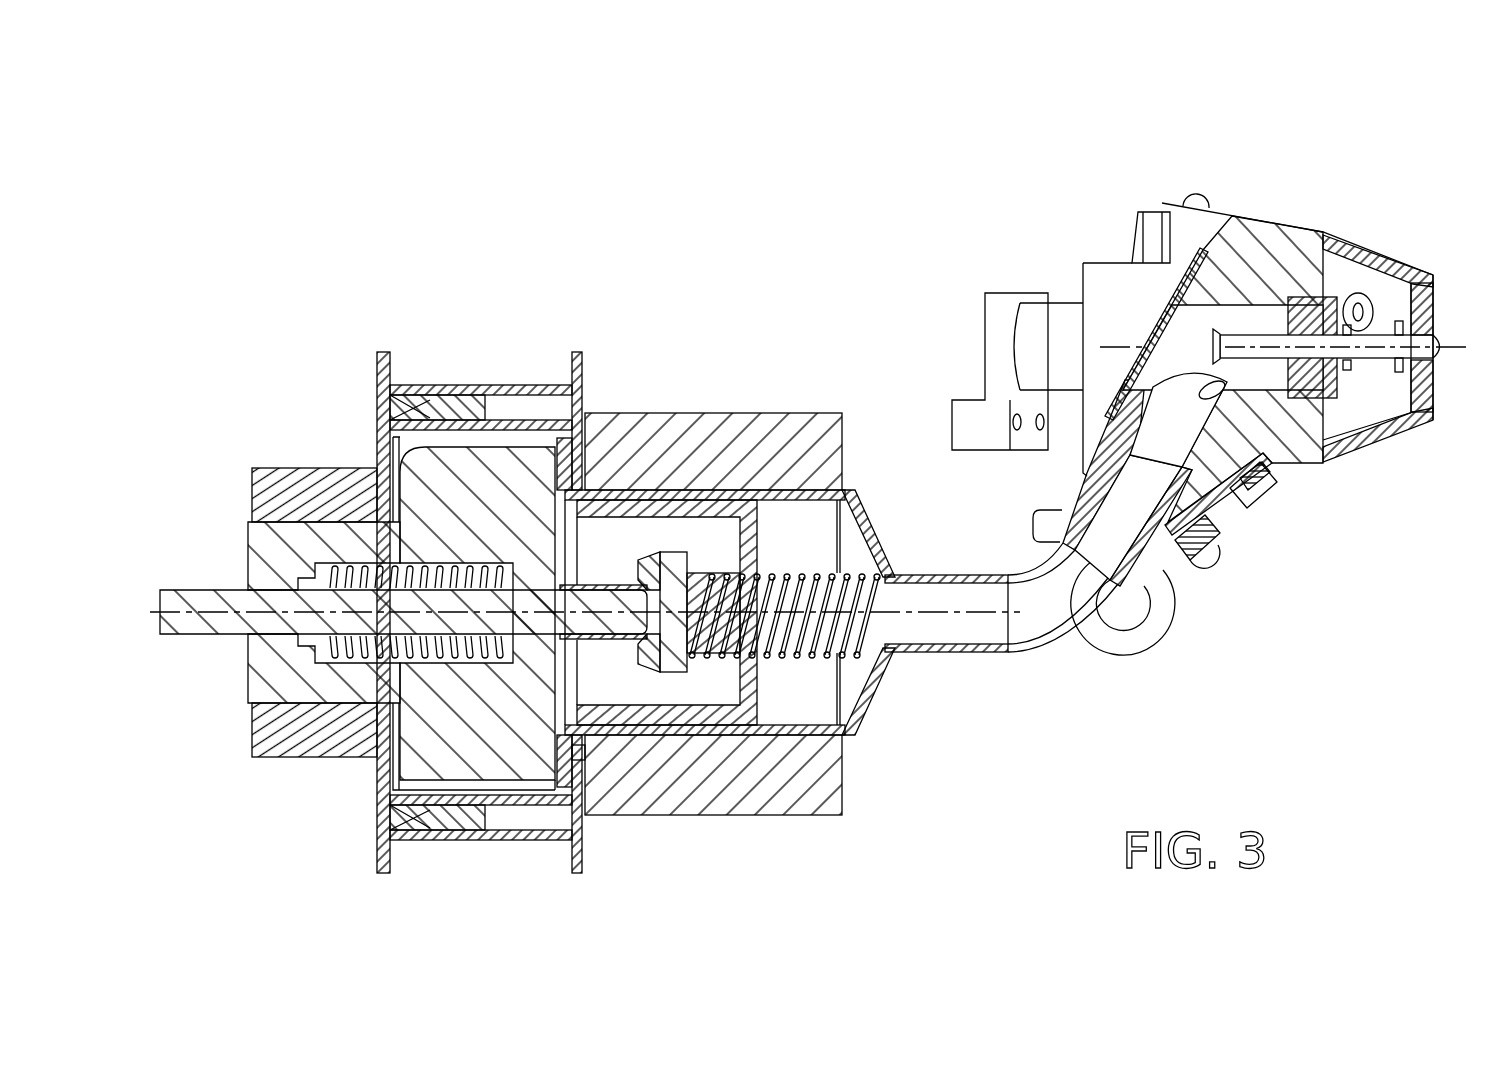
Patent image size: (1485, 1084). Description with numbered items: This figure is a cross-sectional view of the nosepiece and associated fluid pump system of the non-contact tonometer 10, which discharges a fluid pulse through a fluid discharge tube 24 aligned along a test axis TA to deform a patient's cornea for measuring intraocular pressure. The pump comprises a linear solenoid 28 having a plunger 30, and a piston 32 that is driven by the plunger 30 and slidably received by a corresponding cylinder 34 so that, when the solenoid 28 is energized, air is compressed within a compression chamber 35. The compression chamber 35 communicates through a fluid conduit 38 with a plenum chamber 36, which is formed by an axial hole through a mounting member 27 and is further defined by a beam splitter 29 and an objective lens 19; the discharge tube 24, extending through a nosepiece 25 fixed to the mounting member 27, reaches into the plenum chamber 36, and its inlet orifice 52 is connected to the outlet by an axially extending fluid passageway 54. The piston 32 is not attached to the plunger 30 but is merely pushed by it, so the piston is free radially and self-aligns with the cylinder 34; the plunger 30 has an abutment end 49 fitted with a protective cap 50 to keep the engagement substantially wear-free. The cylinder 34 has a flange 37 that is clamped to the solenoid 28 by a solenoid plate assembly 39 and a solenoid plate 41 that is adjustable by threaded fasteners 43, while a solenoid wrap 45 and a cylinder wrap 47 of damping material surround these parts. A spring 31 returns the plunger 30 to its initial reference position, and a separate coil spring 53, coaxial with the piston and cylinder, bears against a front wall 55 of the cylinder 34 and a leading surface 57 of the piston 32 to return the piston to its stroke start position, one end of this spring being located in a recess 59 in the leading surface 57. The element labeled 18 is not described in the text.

The non-contact tonometer 10 is at (592, 232).
The end cap 18 is at (1435, 402).
The objective lens 19 is at (1368, 428).
The fluid discharge tube 24 is at (1270, 337).
The nosepiece 25 is at (1372, 252).
The mounting member 27 is at (1280, 222).
The linear solenoid 28 is at (250, 540).
The beam splitter 29 is at (1170, 330).
The plunger 30 is at (222, 636).
The spring 31 is at (400, 585).
The piston 32 is at (712, 560).
The cylinder 34 is at (820, 735).
The compression chamber 35 is at (824, 685).
The plenum chamber 36 is at (1203, 333).
The flange 37 is at (585, 762).
The fluid conduit 38 is at (1028, 650).
The solenoid plate assembly 39 is at (585, 358).
The solenoid plate 41 is at (385, 358).
The threaded fasteners 43 is at (433, 404).
The solenoid wrap 45 is at (298, 468).
The cylinder wrap 47 is at (735, 413).
The abutment end 49 is at (622, 556).
The protective cap 50 is at (640, 668).
The inlet orifice 52 is at (1215, 348).
The spring 53 is at (890, 632).
The fluid passageway 54 is at (1348, 352).
The front wall 55 is at (855, 530).
The leading surface 57 is at (760, 540).
The recess 59 is at (760, 577).
The test axis TA is at (1285, 355).